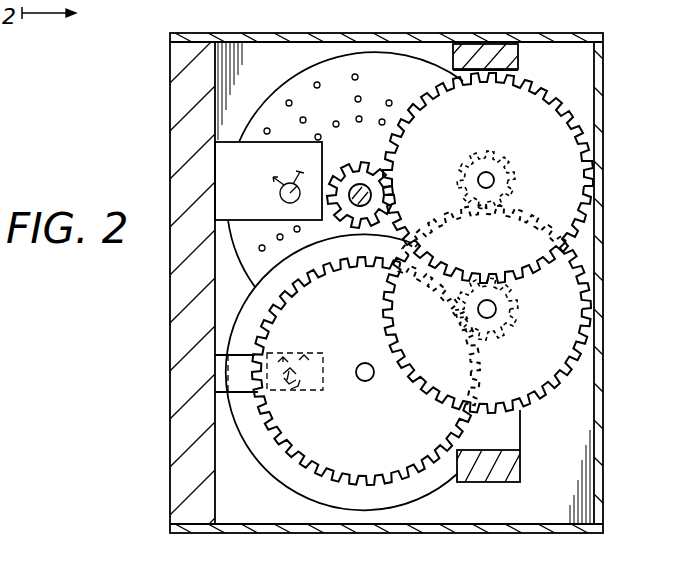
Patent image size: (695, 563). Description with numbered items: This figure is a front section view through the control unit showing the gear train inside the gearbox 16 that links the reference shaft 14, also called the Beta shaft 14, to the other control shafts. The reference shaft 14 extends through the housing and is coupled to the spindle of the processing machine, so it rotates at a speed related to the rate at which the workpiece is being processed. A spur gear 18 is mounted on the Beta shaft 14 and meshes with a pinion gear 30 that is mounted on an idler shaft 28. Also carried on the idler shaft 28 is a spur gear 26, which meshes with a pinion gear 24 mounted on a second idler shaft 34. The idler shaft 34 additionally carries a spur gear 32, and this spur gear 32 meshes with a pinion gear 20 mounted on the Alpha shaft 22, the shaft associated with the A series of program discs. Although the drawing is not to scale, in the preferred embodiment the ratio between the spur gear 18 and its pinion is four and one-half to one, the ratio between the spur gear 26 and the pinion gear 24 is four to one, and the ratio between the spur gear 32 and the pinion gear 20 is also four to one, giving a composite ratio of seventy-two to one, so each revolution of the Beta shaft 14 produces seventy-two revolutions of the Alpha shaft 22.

The reference shaft 14 is at (365, 381).
The gearbox 16 is at (497, 57).
The spur gear 18 is at (312, 455).
The pinion gear 20 is at (372, 147).
The Alpha shaft 22 is at (371, 198).
The pinion gear 24 is at (491, 158).
The spur gear 26 is at (567, 285).
The idler shaft 28 is at (497, 309).
The pinion gear 30 is at (507, 333).
The spur gear 32 is at (567, 130).
The idler shaft 34 is at (495, 181).